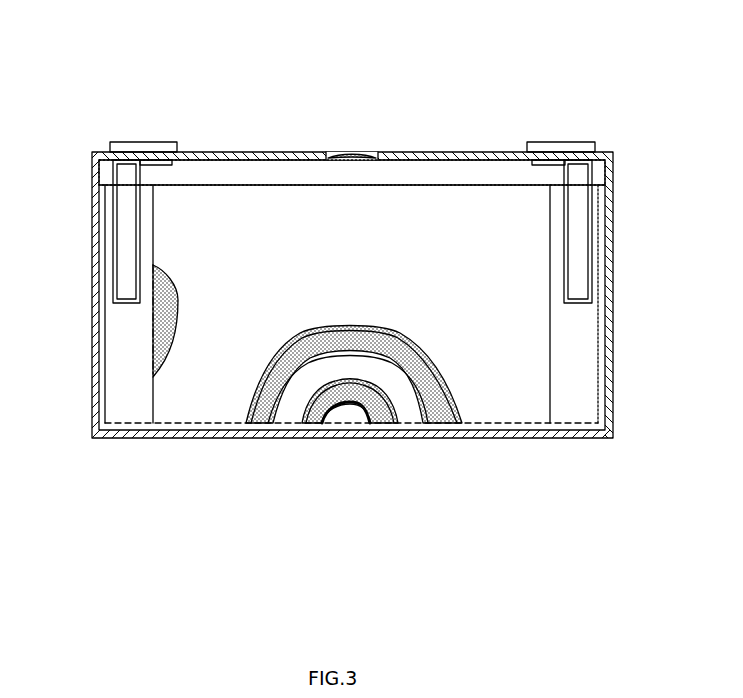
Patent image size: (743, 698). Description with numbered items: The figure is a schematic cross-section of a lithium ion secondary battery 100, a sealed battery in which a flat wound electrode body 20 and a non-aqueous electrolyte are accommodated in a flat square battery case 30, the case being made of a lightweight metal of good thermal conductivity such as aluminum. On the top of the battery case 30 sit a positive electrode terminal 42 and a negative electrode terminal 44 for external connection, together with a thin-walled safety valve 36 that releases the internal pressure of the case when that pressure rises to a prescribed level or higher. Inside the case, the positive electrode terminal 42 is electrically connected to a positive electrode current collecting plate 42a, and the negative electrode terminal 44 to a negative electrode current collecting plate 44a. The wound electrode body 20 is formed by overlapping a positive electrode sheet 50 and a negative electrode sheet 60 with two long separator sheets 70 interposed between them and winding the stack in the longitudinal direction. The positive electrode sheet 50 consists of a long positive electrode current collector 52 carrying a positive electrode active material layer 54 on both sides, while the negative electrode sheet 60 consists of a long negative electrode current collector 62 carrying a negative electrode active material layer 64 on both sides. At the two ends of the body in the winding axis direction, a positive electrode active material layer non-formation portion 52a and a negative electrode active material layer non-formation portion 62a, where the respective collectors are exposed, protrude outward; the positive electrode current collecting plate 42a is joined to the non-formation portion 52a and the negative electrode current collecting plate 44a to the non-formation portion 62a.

The lithium ion secondary battery 100 is at (630, 78).
The battery case 30 is at (615, 258).
The safety valve 36 is at (360, 152).
The wound electrode body 20 is at (273, 185).
The positive electrode terminal 42 is at (152, 142).
The positive electrode current collecting plate 42a is at (125, 222).
The negative electrode terminal 44 is at (568, 142).
The negative electrode current collecting plate 44a is at (582, 217).
The positive electrode sheet 50 is at (262, 420).
The positive electrode current collector 52 is at (105, 323).
The positive electrode active material layer non-formation portion 52a is at (118, 392).
The positive electrode active material layer 54 is at (178, 297).
The negative electrode sheet 60 is at (318, 410).
The negative electrode current collector 62 is at (598, 325).
The negative electrode active material layer non-formation portion 62a is at (590, 392).
The negative electrode active material layer 64 is at (346, 412).
The separator sheet 70 is at (195, 375).